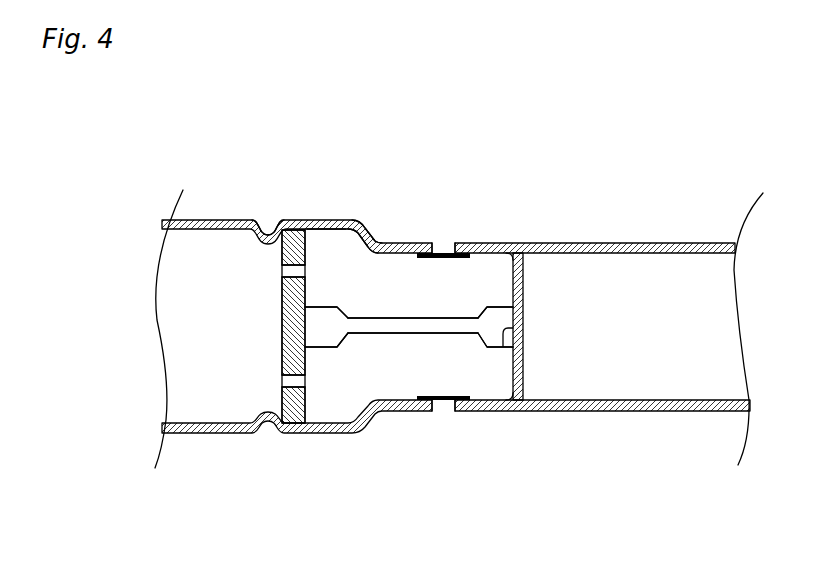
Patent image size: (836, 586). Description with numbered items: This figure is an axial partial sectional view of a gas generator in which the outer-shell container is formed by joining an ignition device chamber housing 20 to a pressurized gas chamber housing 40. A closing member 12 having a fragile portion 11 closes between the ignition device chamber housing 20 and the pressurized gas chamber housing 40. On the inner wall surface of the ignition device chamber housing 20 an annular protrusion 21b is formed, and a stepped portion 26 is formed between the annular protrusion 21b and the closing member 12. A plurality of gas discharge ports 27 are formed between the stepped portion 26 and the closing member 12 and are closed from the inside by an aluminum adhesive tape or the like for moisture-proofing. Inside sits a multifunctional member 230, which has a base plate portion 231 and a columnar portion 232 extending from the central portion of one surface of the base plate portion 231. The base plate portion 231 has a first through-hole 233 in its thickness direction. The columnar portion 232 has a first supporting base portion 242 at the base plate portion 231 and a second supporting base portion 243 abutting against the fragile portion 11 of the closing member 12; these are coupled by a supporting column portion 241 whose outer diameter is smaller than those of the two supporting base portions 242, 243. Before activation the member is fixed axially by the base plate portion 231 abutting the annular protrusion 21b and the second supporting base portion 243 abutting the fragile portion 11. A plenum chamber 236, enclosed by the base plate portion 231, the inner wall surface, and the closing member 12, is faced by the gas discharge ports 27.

The fragile portion 11 is at (503, 347).
The closing member 12 is at (523, 358).
The ignition device chamber housing 20 is at (203, 220).
The annular protrusion 21b is at (268, 243).
The stepped portion 26 is at (358, 232).
The gas discharge port 27 is at (443, 243).
The pressurized gas chamber housing 40 is at (653, 243).
The multifunctional member 230 is at (306, 393).
The base plate portion 231 is at (282, 318).
The columnar portion 232 is at (398, 342).
The first through-hole 233 is at (282, 382).
The plenum chamber 236 is at (323, 248).
The supporting column portion 241 is at (402, 320).
The first supporting base portion 242 is at (323, 347).
The second supporting base portion 243 is at (510, 317).